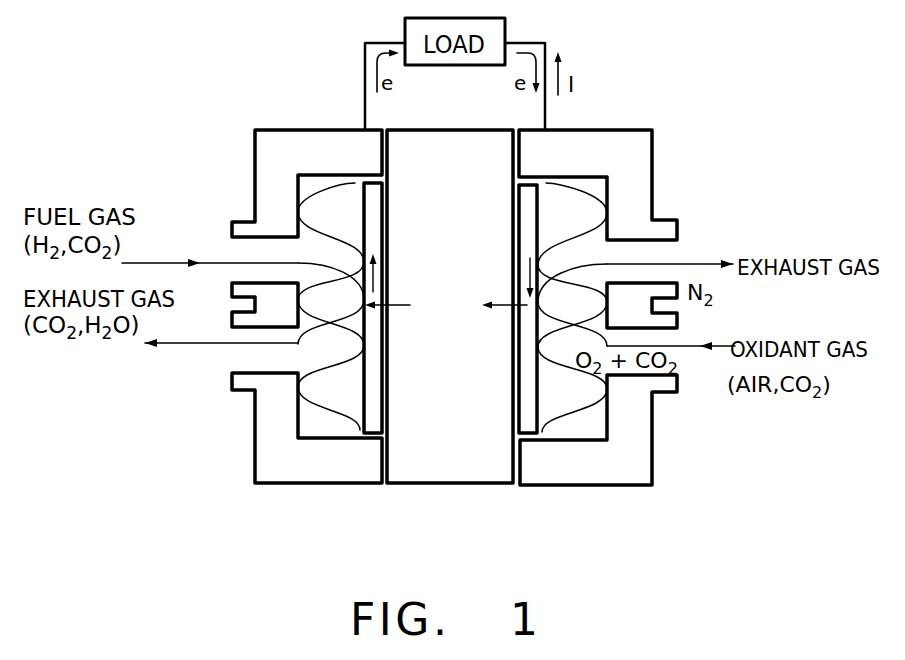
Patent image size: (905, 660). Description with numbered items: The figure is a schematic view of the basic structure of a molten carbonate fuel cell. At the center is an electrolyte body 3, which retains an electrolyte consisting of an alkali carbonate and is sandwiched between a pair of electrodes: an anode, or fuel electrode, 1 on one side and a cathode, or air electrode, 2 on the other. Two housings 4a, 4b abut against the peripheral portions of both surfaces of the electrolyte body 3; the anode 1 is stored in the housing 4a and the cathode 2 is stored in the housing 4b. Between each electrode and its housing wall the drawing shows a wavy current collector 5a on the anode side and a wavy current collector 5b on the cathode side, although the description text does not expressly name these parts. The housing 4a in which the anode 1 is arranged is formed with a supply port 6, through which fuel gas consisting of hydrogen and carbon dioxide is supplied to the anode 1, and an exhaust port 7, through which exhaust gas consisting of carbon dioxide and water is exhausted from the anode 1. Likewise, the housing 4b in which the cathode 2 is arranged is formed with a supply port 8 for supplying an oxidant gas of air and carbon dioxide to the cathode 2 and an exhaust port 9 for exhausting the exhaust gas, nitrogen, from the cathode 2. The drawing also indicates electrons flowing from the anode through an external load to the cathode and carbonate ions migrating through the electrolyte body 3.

The anode 1 is at (368, 442).
The cathode 2 is at (531, 441).
The electrolyte body 3 is at (463, 462).
The housing 4a is at (299, 465).
The housing 4b is at (618, 473).
The anode current collector 5a is at (298, 430).
The cathode current collector 5b is at (610, 421).
The supply port 6 is at (252, 248).
The exhaust port 7 is at (235, 352).
The supply port 8 is at (693, 355).
The exhaust port 9 is at (658, 253).